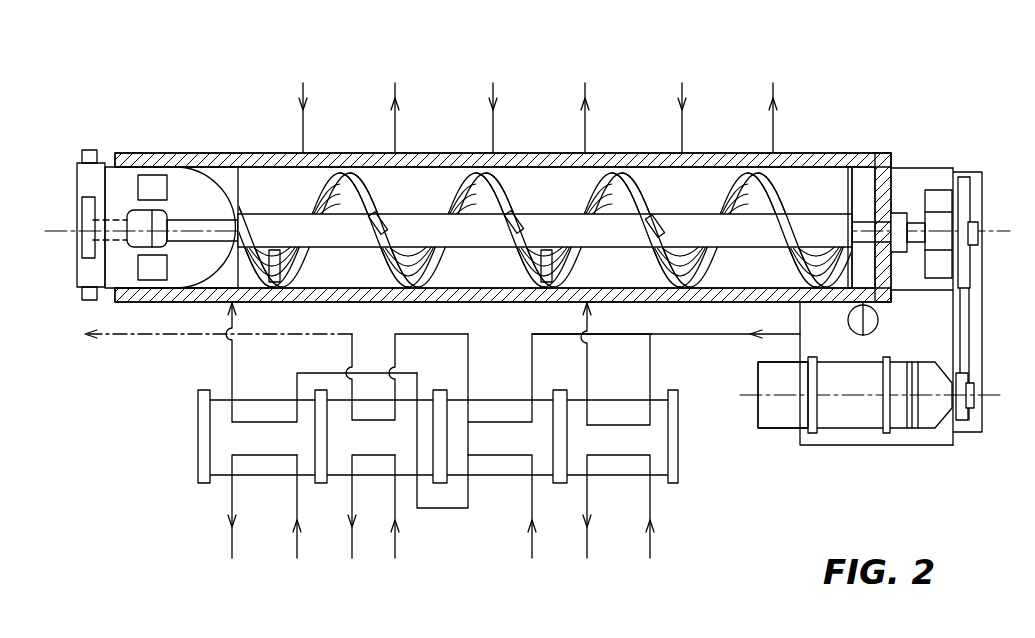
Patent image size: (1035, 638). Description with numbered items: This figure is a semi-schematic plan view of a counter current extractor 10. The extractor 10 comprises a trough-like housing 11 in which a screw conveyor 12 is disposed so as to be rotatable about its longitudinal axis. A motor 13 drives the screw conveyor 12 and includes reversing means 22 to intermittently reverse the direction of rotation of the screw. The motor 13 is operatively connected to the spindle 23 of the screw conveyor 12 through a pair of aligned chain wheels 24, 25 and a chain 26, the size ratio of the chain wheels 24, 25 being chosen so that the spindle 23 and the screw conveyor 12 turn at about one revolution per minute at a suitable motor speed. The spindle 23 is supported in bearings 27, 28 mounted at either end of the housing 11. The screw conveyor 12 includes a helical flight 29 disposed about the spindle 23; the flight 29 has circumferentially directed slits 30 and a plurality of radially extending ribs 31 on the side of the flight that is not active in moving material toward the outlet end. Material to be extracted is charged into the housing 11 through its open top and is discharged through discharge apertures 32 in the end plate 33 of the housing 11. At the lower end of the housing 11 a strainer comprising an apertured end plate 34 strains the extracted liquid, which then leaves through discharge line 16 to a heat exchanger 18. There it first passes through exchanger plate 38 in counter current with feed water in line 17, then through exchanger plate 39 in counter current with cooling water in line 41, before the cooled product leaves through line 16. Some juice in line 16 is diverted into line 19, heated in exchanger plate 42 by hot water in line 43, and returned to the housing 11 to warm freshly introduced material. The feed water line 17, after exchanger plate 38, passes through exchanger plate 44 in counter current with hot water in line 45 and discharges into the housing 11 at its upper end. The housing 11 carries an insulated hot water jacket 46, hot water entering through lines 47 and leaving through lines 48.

The extractor 10 is at (202, 150).
The housing 11 is at (225, 152).
The screw conveyor 12 is at (272, 212).
The motor 13 is at (782, 420).
The discharge line 16 is at (712, 337).
The feed water line 17 is at (232, 362).
The heat exchanger 18 is at (210, 440).
The recycle line 19 is at (652, 362).
The reversing means 22 is at (852, 420).
The spindle 23 is at (575, 190).
The chain wheel 24 is at (968, 420).
The chain wheel 25 is at (972, 172).
The chain 26 is at (960, 327).
The bearing 27 is at (940, 232).
The bearing 28 is at (91, 240).
The helical flight 29 is at (536, 263).
The slits 30 is at (764, 210).
The ribs 31 is at (302, 263).
The discharge apertures 32 is at (148, 186).
The end plate 33 is at (178, 206).
The end plate 34 is at (850, 167).
The exchanger plate 38 is at (497, 412).
The exchanger plate 39 is at (373, 412).
The cooling water line 41 is at (395, 551).
The exchanger plate 42 is at (660, 442).
The hot water line 43 is at (652, 513).
The exchanger plate 44 is at (218, 462).
The hot water line 45 is at (297, 545).
The hot water jacket 46 is at (432, 153).
The jacket inlet lines 47 is at (505, 107).
The jacket outlet lines 48 is at (600, 109).